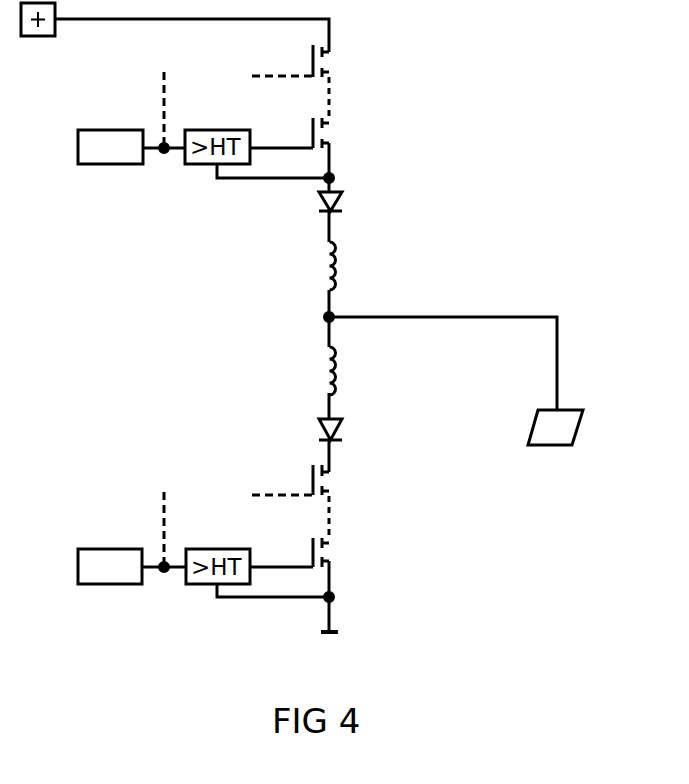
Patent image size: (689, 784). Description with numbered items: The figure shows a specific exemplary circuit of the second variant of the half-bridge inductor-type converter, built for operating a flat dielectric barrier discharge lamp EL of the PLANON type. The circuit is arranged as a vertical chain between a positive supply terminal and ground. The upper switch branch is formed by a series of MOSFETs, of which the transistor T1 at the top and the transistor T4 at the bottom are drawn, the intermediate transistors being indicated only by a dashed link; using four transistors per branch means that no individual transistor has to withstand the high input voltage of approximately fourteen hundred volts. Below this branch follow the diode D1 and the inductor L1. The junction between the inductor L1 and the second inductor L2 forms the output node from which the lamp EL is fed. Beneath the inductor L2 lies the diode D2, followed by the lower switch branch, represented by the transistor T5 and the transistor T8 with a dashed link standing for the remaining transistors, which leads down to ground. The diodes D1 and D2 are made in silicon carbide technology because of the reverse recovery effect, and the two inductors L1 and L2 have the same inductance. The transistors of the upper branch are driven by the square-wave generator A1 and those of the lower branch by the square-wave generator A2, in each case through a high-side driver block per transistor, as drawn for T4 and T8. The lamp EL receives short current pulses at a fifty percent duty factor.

The MOSFET transistor T1 is at (311, 61).
The MOSFET transistor T4 is at (310, 133).
The diode D1 is at (351, 204).
The inductor L1 is at (354, 266).
The inductor L2 is at (354, 371).
The diode D2 is at (351, 430).
The MOSFET transistor T5 is at (311, 480).
The MOSFET transistor T8 is at (310, 552).
The dielectric barrier discharge lamp EL is at (574, 427).
The driving square-wave generator A1 is at (110, 147).
The driving square-wave generator A2 is at (110, 566).